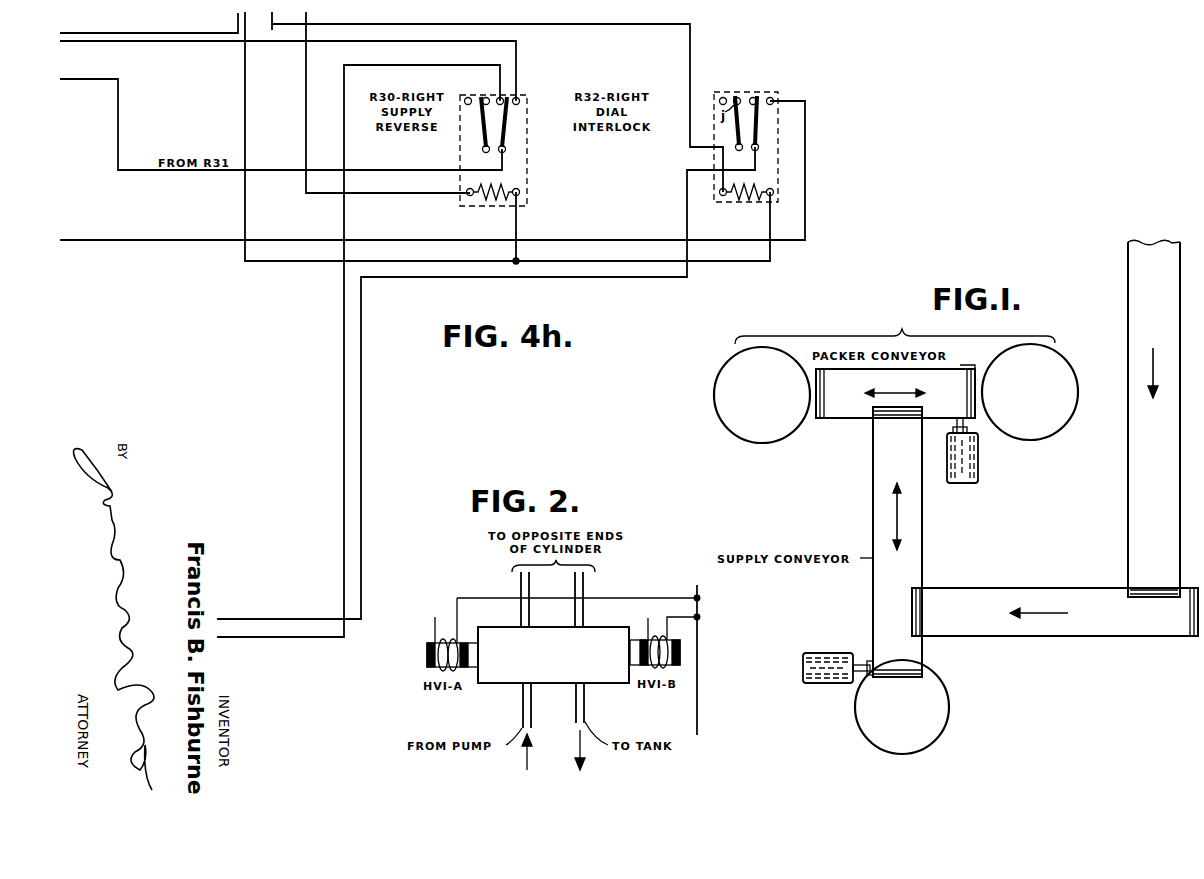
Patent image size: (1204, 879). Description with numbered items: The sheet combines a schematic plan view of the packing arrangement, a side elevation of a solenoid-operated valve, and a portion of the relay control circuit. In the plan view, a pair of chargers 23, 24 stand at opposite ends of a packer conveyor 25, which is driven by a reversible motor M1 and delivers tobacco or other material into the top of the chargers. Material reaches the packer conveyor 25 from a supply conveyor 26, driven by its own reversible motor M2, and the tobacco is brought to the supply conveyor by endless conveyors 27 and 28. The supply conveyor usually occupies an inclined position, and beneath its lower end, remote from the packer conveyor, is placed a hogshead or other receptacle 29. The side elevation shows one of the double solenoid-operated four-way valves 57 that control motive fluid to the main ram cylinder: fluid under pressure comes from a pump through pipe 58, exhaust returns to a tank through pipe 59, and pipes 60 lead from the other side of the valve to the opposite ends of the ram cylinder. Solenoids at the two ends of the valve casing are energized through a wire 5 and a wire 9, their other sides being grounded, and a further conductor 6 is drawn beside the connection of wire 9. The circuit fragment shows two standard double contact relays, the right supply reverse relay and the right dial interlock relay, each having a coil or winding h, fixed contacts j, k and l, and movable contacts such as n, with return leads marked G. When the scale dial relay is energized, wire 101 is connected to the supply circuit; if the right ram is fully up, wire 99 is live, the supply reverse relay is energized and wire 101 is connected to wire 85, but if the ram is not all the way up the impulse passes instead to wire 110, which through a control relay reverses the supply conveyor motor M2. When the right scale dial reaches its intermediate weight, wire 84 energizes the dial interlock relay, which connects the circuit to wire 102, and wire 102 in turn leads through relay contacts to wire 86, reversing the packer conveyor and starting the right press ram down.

In FIG. 4H, the wire 86 is at (60, 33).
In FIG. 4H, the wire 85 is at (60, 41).
In FIG. 4H, the wire 101 is at (118, 79).
In FIG. 4H, the wire 102 is at (66, 233).
In FIG. 4H, the wire 99 is at (306, 20).
In FIG. 4H, the wire 84 is at (272, 30).
In FIG. 4H, the wire 110 is at (344, 74).
In FIG. 4H, the fixed contact l is at (361, 280).
In FIG. 4H, the ground conductor G is at (245, 20).
In FIG. 4H, the fixed contact j is at (480, 105).
In FIG. 4H, the fixed contact k is at (502, 106).
In FIG. 4H, the movable contact n is at (512, 114).
In FIG. 4H, the coil h is at (493, 203).
In FIG. 1, the charger 23 is at (716, 386).
In FIG. 1, the charger 24 is at (1068, 368).
In FIG. 1, the packer conveyor 25 is at (848, 417).
In FIG. 1, the reversible motor M1 is at (978, 472).
In FIG. 1, the supply conveyor 26 is at (873, 486).
In FIG. 1, the endless conveyor 27 is at (997, 592).
In FIG. 1, the endless conveyor 28 is at (1137, 438).
In FIG. 1, the reversible motor M2 is at (803, 667).
In FIG. 1, the hogshead 29 is at (948, 695).
In FIG. 2, the four-way valve 57 is at (560, 627).
In FIG. 2, the pipes 60 is at (529, 592).
In FIG. 2, the pipe 58 is at (523, 713).
In FIG. 2, the pipe 59 is at (585, 708).
In FIG. 2, the wire 5 is at (435, 622).
In FIG. 2, the wire 9 is at (648, 620).
In FIG. 2, the conductor 6 is at (697, 686).